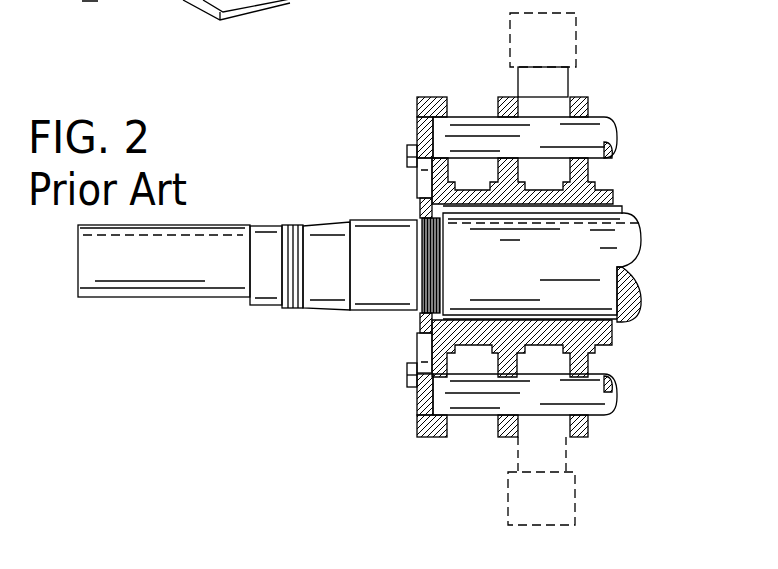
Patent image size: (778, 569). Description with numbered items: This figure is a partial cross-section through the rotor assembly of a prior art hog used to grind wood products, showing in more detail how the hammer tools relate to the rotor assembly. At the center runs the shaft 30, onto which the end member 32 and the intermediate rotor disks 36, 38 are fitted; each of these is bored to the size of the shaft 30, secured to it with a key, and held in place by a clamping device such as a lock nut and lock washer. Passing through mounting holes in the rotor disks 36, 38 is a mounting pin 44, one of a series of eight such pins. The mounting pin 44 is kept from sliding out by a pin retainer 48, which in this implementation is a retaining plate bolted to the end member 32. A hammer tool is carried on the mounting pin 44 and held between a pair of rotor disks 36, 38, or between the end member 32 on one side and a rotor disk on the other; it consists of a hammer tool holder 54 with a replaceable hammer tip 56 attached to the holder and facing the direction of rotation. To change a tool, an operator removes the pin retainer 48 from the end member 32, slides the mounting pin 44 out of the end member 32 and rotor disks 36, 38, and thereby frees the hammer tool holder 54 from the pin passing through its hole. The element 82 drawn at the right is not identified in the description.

The shaft 30 is at (268, 223).
The end member 32 is at (418, 126).
The rotor disk 36 is at (498, 100).
The rotor disk 38 is at (588, 106).
The mounting pin 44 is at (613, 128).
The pin retainer 48 is at (418, 130).
The hammer tool holder 54 is at (568, 74).
The replaceable hammer tip 56 is at (576, 41).
The output shaft 82 is at (619, 247).